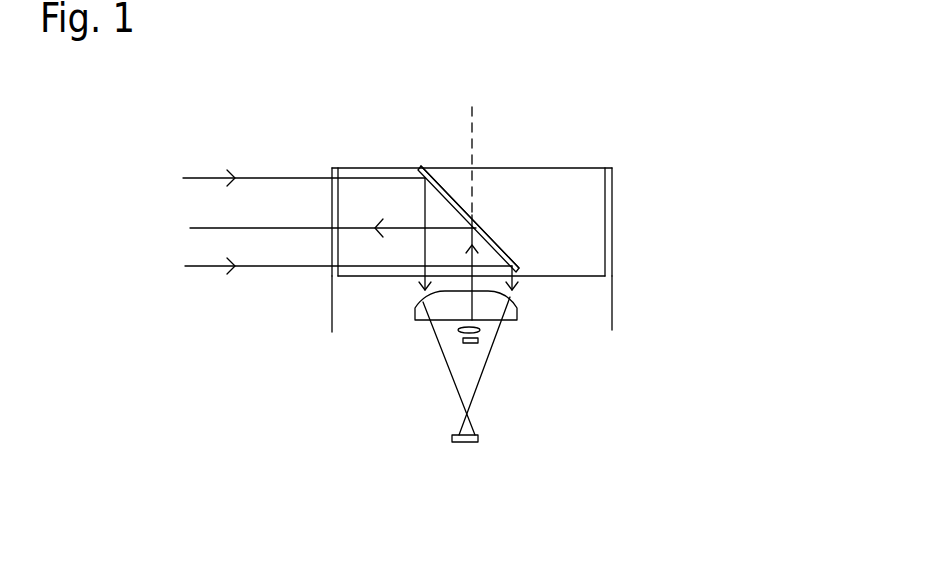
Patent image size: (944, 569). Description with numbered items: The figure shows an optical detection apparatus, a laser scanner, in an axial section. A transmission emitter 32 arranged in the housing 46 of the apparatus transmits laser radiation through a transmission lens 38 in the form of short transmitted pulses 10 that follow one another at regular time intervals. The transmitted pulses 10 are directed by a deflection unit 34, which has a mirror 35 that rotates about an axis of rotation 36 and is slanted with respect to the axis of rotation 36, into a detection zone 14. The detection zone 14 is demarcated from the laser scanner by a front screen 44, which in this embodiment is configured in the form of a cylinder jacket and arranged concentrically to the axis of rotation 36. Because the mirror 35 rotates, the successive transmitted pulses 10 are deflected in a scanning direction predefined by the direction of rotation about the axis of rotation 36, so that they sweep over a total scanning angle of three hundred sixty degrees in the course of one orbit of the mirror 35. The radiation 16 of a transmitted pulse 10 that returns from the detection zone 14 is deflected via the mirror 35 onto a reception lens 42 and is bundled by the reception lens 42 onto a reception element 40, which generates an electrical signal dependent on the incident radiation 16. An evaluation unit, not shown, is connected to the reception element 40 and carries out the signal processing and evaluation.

The transmitted pulses 10 is at (259, 228).
The detection zone 14 is at (157, 233).
The radiation 16 is at (199, 177).
The transmission emitter 32 is at (478, 342).
The deflection unit 34 is at (489, 196).
The mirror 35 is at (503, 258).
The axis of rotation 36 is at (473, 147).
The transmission lens 38 is at (482, 332).
The reception element 40 is at (478, 439).
The reception lens 42 is at (517, 317).
The front screen 44 is at (338, 198).
The housing 46 is at (333, 317).